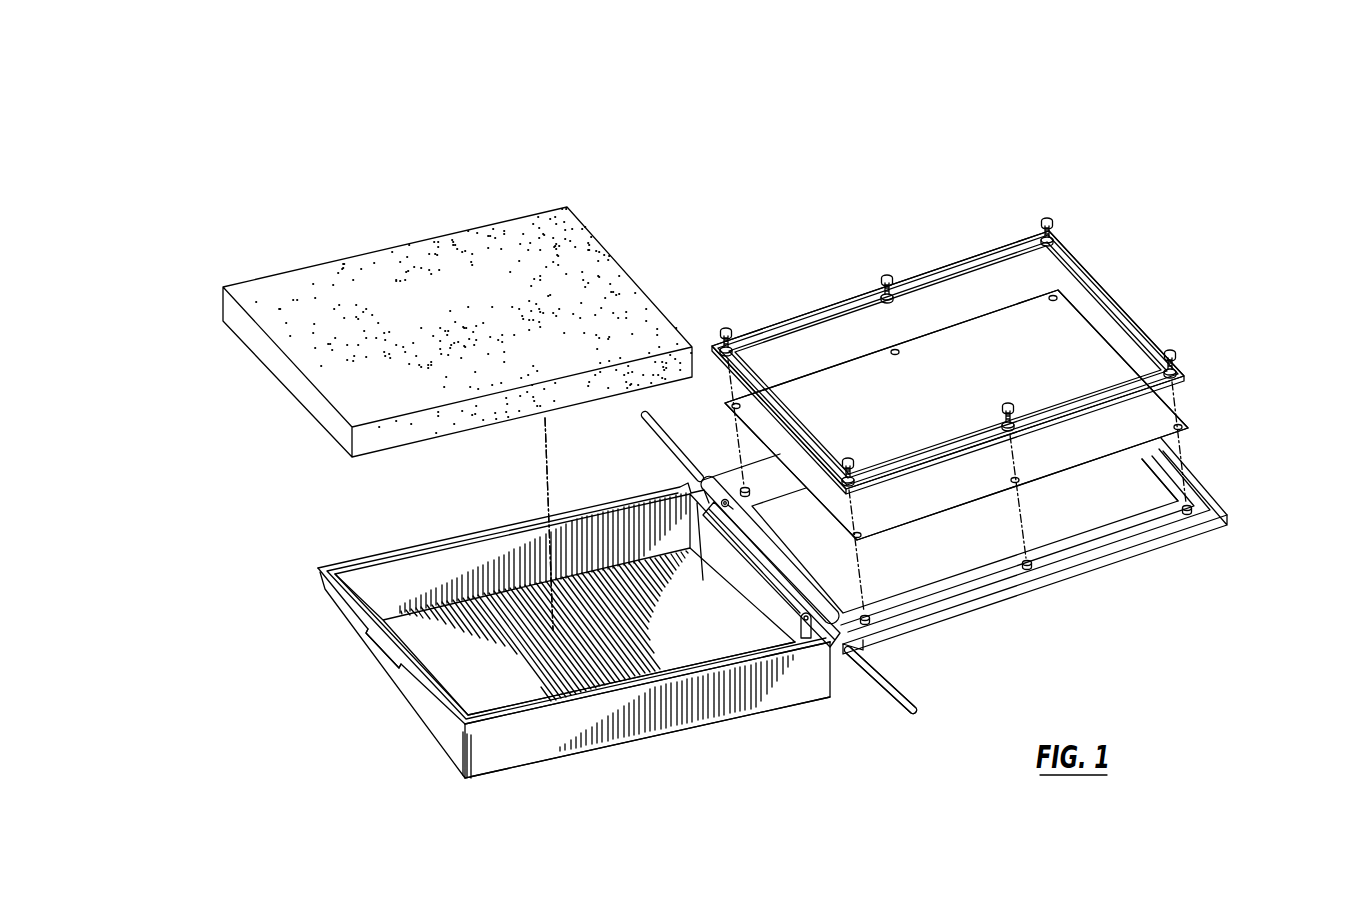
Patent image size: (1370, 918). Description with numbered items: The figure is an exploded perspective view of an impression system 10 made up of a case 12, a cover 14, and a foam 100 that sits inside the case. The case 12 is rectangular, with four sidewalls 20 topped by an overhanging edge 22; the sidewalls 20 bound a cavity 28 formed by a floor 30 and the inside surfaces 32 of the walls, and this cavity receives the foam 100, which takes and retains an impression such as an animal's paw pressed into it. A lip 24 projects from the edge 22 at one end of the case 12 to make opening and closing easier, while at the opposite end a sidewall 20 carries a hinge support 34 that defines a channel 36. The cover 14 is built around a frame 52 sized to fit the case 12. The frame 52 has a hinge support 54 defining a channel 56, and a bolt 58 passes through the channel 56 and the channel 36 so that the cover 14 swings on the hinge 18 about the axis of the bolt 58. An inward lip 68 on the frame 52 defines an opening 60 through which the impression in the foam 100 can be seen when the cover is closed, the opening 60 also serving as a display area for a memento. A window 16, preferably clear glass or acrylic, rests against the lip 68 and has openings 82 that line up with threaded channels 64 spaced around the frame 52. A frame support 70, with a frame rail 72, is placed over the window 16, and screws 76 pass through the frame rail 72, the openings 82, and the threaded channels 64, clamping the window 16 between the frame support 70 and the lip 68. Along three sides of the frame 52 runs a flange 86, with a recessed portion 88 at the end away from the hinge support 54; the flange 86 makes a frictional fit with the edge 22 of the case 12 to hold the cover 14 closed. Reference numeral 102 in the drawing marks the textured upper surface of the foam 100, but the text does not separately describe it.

The impression system 10 is at (310, 195).
The case 12 is at (258, 573).
The cover 14 is at (1249, 402).
The window 16 is at (1031, 373).
The hinge 18 is at (919, 714).
The sidewalls 20 is at (500, 755).
The edge 22 is at (417, 548).
The lip 24 is at (382, 645).
The cavity 28 is at (472, 644).
The floor 30 is at (525, 592).
The inside surfaces 32 is at (653, 521).
The hinge support 34 is at (750, 550).
The channel 36 is at (808, 612).
The frame 52 is at (1213, 487).
The hinge support 54 is at (735, 486).
The channel 56 is at (735, 503).
The bolt 58 is at (905, 688).
The opening 60 is at (1056, 527).
The threaded channels 64 is at (1188, 513).
The lip 68 is at (1143, 465).
The frame support 70 is at (1090, 270).
The frame rail 72 is at (1115, 392).
The screw 76 is at (1176, 355).
The openings 82 is at (1019, 482).
The flange 86 is at (1183, 467).
The recessed portion 88 is at (1195, 436).
The foam 100 is at (616, 152).
The textured surface 102 is at (597, 277).